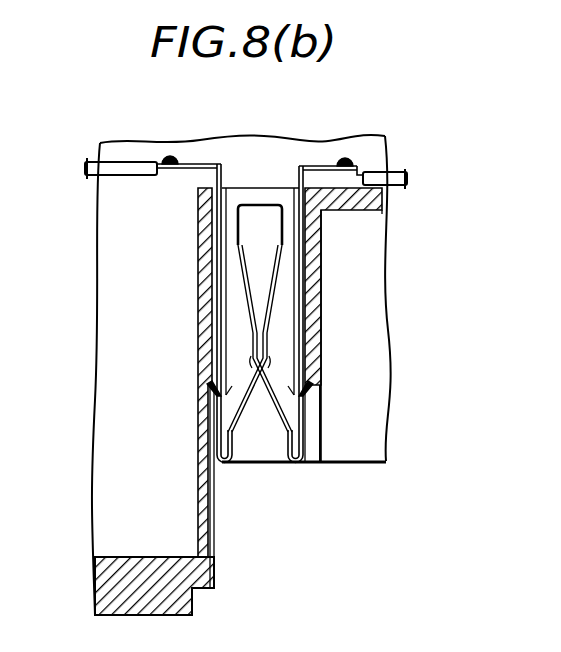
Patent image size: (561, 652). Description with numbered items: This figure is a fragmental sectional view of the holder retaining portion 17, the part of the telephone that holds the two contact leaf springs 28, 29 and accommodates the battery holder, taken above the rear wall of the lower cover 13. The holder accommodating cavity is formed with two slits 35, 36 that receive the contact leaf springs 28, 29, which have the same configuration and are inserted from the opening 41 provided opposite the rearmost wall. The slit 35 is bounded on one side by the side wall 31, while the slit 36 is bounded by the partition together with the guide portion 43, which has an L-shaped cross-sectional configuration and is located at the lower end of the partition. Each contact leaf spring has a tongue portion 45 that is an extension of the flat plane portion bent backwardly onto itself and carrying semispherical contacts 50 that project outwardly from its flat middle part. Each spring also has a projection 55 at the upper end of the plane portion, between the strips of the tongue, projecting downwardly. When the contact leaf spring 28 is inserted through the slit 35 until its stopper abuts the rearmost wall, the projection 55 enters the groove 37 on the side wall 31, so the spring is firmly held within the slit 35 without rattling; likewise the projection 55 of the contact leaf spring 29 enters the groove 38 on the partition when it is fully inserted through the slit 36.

The lower cover 13 is at (170, 595).
The holder retaining portion 17 is at (360, 313).
The contact leaf spring 28 is at (231, 163).
The contact leaf spring 29 is at (297, 163).
The side wall 31 is at (199, 313).
The slit 35 is at (198, 232).
The slit 36 is at (300, 231).
The groove 37 is at (216, 551).
The groove 38 is at (318, 438).
The opening 41 is at (250, 187).
The guide portion 43 is at (310, 352).
The tongue portion 45 is at (227, 468).
The semispherical contact 50 is at (260, 385).
The projection 55 is at (200, 402).